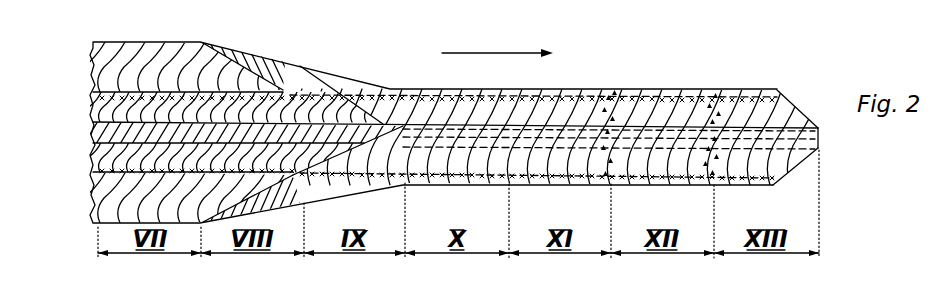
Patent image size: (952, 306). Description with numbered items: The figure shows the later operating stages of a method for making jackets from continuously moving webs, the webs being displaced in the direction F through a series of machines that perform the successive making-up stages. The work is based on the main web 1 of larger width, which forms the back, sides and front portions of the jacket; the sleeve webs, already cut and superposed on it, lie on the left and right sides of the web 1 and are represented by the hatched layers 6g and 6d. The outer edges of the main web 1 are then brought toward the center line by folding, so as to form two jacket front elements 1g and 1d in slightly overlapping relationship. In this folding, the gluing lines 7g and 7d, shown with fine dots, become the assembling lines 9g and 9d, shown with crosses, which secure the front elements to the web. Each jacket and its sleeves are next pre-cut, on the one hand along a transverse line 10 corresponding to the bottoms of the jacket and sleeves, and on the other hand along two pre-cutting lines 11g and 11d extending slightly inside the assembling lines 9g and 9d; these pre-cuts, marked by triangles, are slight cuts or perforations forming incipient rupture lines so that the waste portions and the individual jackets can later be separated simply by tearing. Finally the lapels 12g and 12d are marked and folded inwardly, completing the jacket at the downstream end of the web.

The main web 1 is at (133, 68).
The jacket front element 1g is at (478, 113).
The jacket front element 1d is at (463, 160).
The left sheath layer 6g is at (97, 106).
The right sheath layer 6d is at (100, 156).
The gluing line 7g is at (278, 110).
The gluing line 7d is at (293, 148).
The assembling line 9g is at (388, 100).
The assembling line 9d is at (395, 155).
The transverse pre-cutting line 10 is at (613, 108).
The pre-cutting line 11g is at (710, 98).
The pre-cutting line 11d is at (697, 167).
The lapel 12g is at (800, 130).
The lapel 12d is at (808, 160).
The direction of displacement F is at (497, 41).